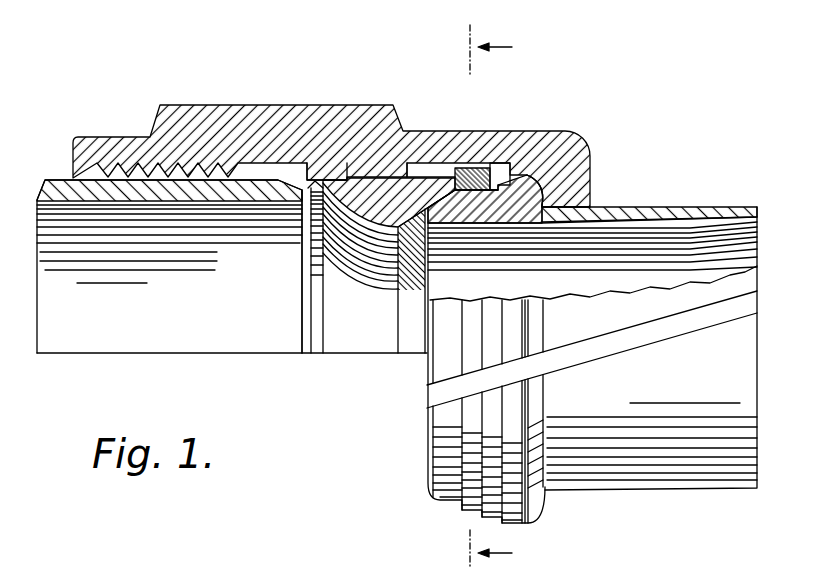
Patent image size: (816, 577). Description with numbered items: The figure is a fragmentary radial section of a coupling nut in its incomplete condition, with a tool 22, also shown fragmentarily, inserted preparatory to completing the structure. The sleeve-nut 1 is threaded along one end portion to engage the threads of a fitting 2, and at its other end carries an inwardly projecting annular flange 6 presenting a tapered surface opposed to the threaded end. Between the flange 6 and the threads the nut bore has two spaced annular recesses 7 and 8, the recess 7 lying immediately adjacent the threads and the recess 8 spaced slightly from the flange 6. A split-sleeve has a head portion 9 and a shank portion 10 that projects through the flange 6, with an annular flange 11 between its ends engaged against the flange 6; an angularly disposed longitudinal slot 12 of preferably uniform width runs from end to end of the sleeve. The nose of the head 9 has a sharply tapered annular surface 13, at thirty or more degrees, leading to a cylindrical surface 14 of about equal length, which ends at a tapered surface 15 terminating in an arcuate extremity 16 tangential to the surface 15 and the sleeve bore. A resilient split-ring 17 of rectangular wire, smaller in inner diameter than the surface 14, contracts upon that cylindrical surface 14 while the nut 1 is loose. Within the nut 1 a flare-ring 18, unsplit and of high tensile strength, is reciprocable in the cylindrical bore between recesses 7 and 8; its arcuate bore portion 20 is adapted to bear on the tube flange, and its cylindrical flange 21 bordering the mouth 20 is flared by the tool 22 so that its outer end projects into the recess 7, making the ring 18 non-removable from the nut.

The sleeve-nut 1 is at (395, 106).
The fitting 2 is at (503, 296).
The annular flange 6 is at (545, 200).
The annular recess 7 is at (293, 172).
The annular recess 8 is at (425, 168).
The head portion 9 is at (540, 190).
The shank portion 10 is at (655, 210).
The annular flange 11 is at (530, 225).
The longitudinal slot 12 is at (427, 398).
The tapered annular surface 13 is at (497, 177).
The cylindrical surface 14 is at (473, 190).
The tapered surface 15 is at (450, 190).
The arcuate extremity 16 is at (404, 242).
The split-ring 17 is at (472, 172).
The flare-ring 18 is at (360, 186).
The bore portion 20 is at (360, 220).
The cylindrical flange 21 is at (305, 183).
The tool 22 is at (237, 190).